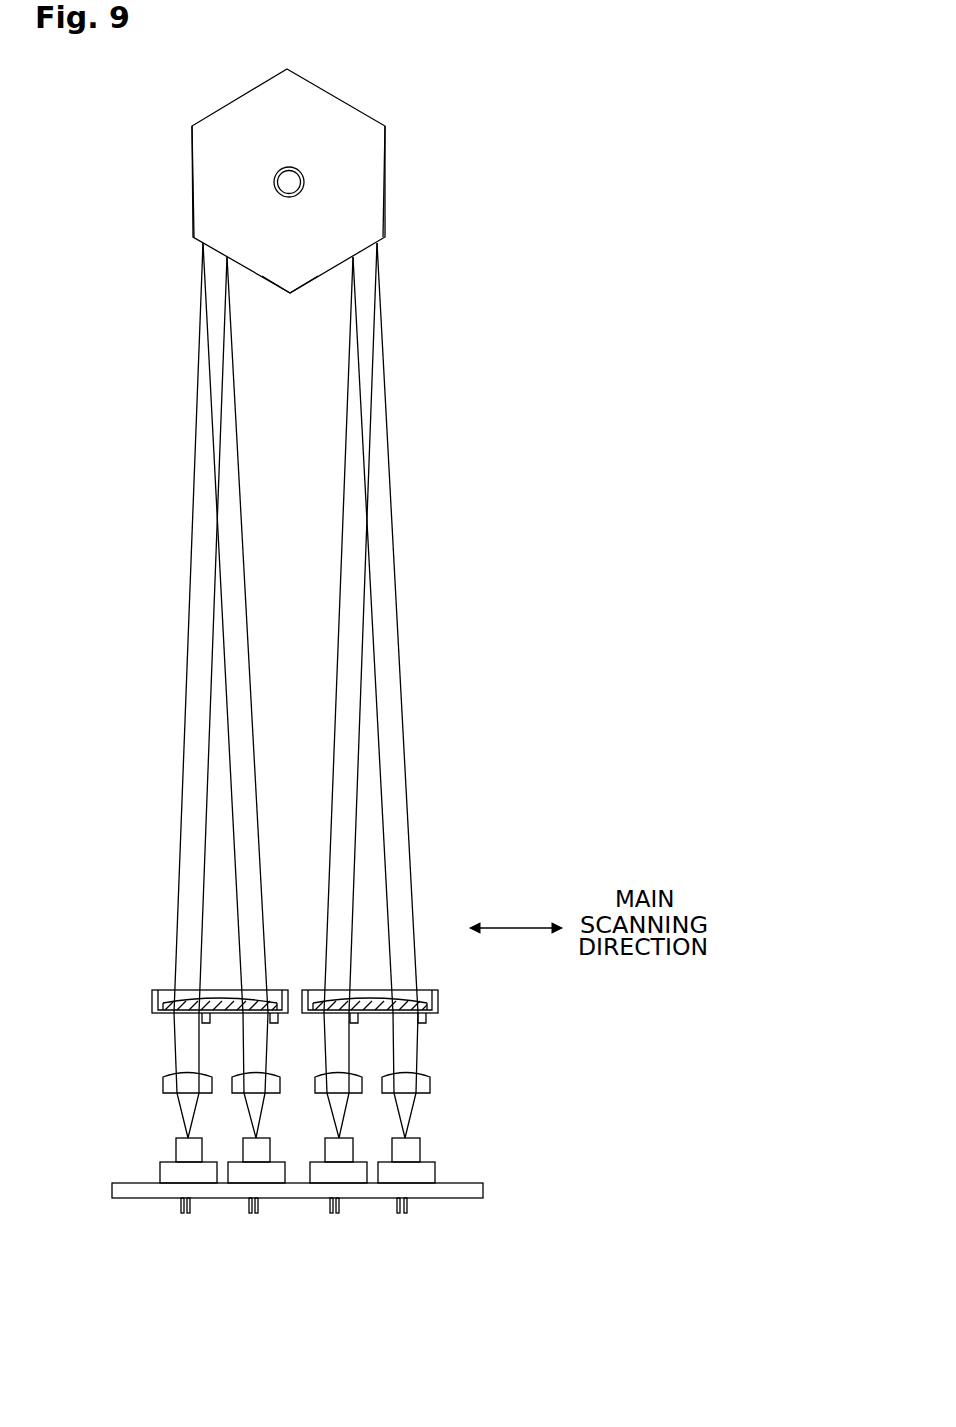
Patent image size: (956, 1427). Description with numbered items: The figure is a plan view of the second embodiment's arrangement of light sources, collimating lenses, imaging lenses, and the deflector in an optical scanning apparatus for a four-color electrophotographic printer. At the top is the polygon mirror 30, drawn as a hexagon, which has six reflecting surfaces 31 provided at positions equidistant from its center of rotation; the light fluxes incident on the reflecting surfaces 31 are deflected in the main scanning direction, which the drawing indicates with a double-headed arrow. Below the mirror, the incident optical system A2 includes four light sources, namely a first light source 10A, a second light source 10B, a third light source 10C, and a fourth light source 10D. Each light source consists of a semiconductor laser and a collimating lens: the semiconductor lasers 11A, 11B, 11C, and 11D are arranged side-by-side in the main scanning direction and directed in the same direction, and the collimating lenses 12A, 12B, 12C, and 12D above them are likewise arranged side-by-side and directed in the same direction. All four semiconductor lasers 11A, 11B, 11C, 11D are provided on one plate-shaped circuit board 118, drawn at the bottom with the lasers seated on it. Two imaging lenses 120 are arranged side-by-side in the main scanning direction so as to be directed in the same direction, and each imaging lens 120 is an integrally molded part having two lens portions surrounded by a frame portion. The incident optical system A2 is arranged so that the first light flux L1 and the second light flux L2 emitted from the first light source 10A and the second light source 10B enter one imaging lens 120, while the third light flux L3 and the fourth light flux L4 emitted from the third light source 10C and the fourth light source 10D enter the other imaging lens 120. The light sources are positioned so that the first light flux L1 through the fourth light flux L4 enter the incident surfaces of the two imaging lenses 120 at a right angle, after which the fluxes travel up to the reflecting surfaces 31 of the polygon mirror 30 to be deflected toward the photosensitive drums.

The polygon mirror 30 is at (357, 106).
The reflecting surface 31 is at (312, 281).
The first light flux L1 is at (410, 860).
The second light flux L2 is at (330, 843).
The third light flux L3 is at (258, 794).
The fourth light flux L4 is at (183, 823).
The imaging lens 120 is at (116, 993).
The incident optical system A2 is at (582, 1024).
The first light source 10A is at (485, 1143).
The second light source 10B is at (345, 1159).
The third light source 10C is at (261, 1159).
The fourth light source 10D is at (161, 1177).
The semiconductor laser 11A is at (423, 1170).
The semiconductor laser 11B is at (316, 1173).
The semiconductor laser 11C is at (237, 1173).
The semiconductor laser 11D is at (176, 1176).
The collimating lens 12A is at (422, 1083).
The collimating lens 12B is at (355, 1078).
The collimating lens 12C is at (274, 1078).
The collimating lens 12D is at (168, 1082).
The circuit board 118 is at (485, 1193).